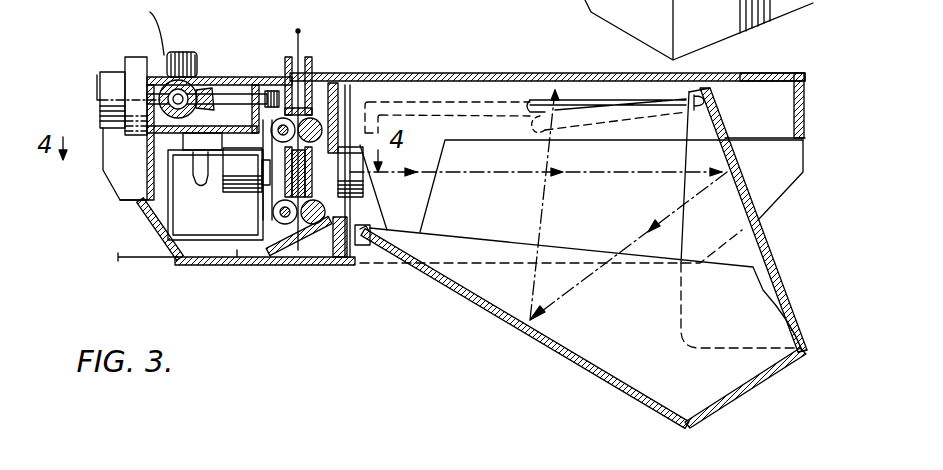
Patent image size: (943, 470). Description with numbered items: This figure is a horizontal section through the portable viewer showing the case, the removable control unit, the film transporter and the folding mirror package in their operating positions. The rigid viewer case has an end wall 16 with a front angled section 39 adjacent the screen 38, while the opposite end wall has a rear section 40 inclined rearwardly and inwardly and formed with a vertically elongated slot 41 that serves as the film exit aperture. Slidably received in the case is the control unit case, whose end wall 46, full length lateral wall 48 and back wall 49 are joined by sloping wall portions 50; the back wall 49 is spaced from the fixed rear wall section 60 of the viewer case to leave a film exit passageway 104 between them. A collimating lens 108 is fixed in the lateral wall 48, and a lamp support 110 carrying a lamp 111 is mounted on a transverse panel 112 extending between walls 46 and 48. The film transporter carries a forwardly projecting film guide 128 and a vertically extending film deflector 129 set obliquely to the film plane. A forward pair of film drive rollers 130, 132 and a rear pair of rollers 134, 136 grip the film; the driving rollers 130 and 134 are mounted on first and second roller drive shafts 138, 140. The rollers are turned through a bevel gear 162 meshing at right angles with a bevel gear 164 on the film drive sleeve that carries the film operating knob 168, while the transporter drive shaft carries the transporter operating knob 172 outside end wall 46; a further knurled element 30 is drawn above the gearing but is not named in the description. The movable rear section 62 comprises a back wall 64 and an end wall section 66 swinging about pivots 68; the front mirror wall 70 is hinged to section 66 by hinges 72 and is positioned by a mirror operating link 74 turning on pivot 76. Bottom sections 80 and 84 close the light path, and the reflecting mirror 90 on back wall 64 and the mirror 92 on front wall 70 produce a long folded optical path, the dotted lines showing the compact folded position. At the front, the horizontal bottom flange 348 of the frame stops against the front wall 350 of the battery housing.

The end wall 16 is at (806, 116).
The worm gear 30 is at (185, 52).
The screen 38 is at (490, 74).
The front angled section 39 is at (758, 73).
The rear section 40 is at (135, 218).
The vertically elongated slot 41 is at (170, 250).
The end wall 46 is at (150, 170).
The lateral wall 48 is at (257, 262).
The back wall 49 is at (238, 258).
The sloping wall portions 50 is at (165, 212).
The fixed rear wall section 60 is at (237, 265).
The movable rear section 62 is at (553, 365).
The back wall 64 is at (500, 320).
The movable end wall section 66 is at (728, 400).
The pivots 68 is at (408, 252).
The movable front mirror wall 70 is at (780, 255).
The hinges 72 is at (805, 352).
The mirror operating link 74 is at (572, 103).
The pivot 76 is at (682, 126).
The bottom section 80 is at (510, 233).
The bottom section 84 is at (683, 188).
The reflecting mirror 90 is at (575, 345).
The mirror 92 is at (742, 205).
The film exit passageway 104 is at (200, 262).
The collimating lens 108 is at (246, 170).
The lamp support 110 is at (150, 205).
The lamp 111 is at (200, 183).
The transverse panel 112 is at (165, 130).
The film guide 128 is at (312, 60).
The film deflector 129 is at (300, 265).
The film drive roller 130 is at (271, 133).
The film drive roller 132 is at (317, 130).
The film drive roller 134 is at (272, 208).
The film drive roller 136 is at (315, 262).
The first roller drive shaft 138 is at (270, 122).
The second roller drive shaft 140 is at (275, 214).
The bevel gear 162 is at (141, 27).
The bevel gear 164 is at (215, 85).
The film operating knob 168 is at (135, 57).
The transporter operating knob 172 is at (113, 73).
The horizontal bottom flange 348 is at (280, 5).
The front wall 350 is at (813, 3).